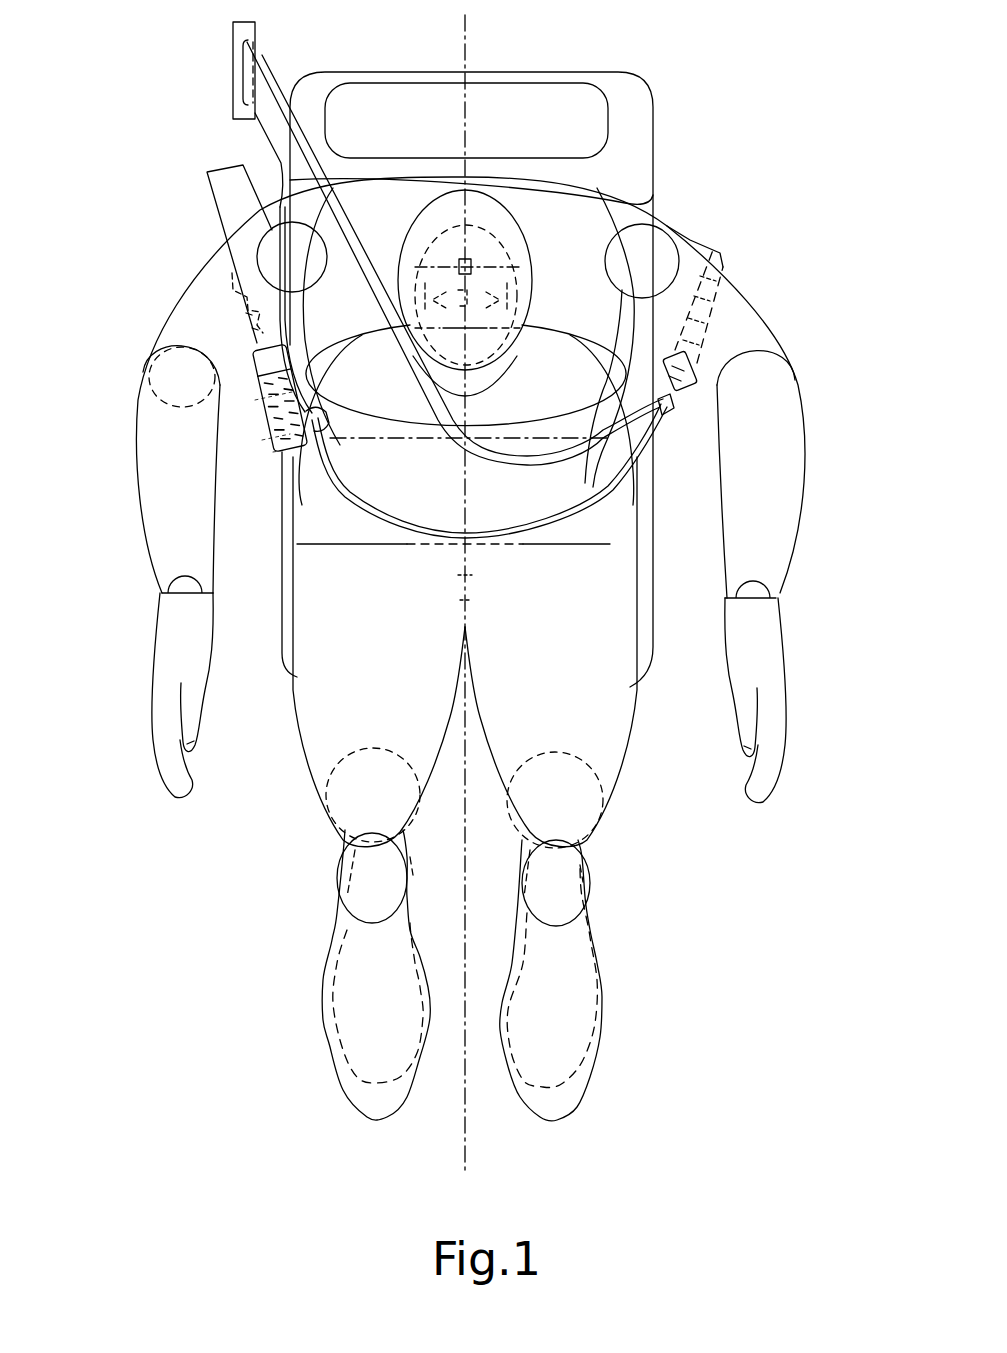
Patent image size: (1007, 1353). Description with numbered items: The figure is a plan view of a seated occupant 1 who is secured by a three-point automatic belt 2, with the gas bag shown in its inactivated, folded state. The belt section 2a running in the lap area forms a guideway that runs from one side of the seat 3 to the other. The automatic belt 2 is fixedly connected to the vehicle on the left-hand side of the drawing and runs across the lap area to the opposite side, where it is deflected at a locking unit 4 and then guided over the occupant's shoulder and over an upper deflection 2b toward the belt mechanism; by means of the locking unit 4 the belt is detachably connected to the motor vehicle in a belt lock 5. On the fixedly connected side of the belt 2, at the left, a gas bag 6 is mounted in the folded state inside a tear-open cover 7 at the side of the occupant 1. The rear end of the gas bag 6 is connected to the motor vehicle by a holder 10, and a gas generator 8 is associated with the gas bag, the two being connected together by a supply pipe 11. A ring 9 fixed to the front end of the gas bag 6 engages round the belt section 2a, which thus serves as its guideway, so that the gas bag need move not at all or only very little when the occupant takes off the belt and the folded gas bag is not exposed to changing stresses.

The occupant 1 is at (730, 317).
The 3-point automatic belt 2 is at (275, 133).
The belt section running in the lap area 2a is at (625, 473).
The upper deflection 2b is at (240, 38).
The seat 3 is at (643, 537).
The locking unit 4 is at (678, 398).
The belt lock 5 is at (693, 332).
The gas bag 6 is at (270, 412).
The tear-open cover 7 is at (272, 432).
The gas generator 8 is at (223, 200).
The ring 9 is at (275, 447).
The holder 10 is at (272, 360).
The supply pipe 11 is at (255, 317).